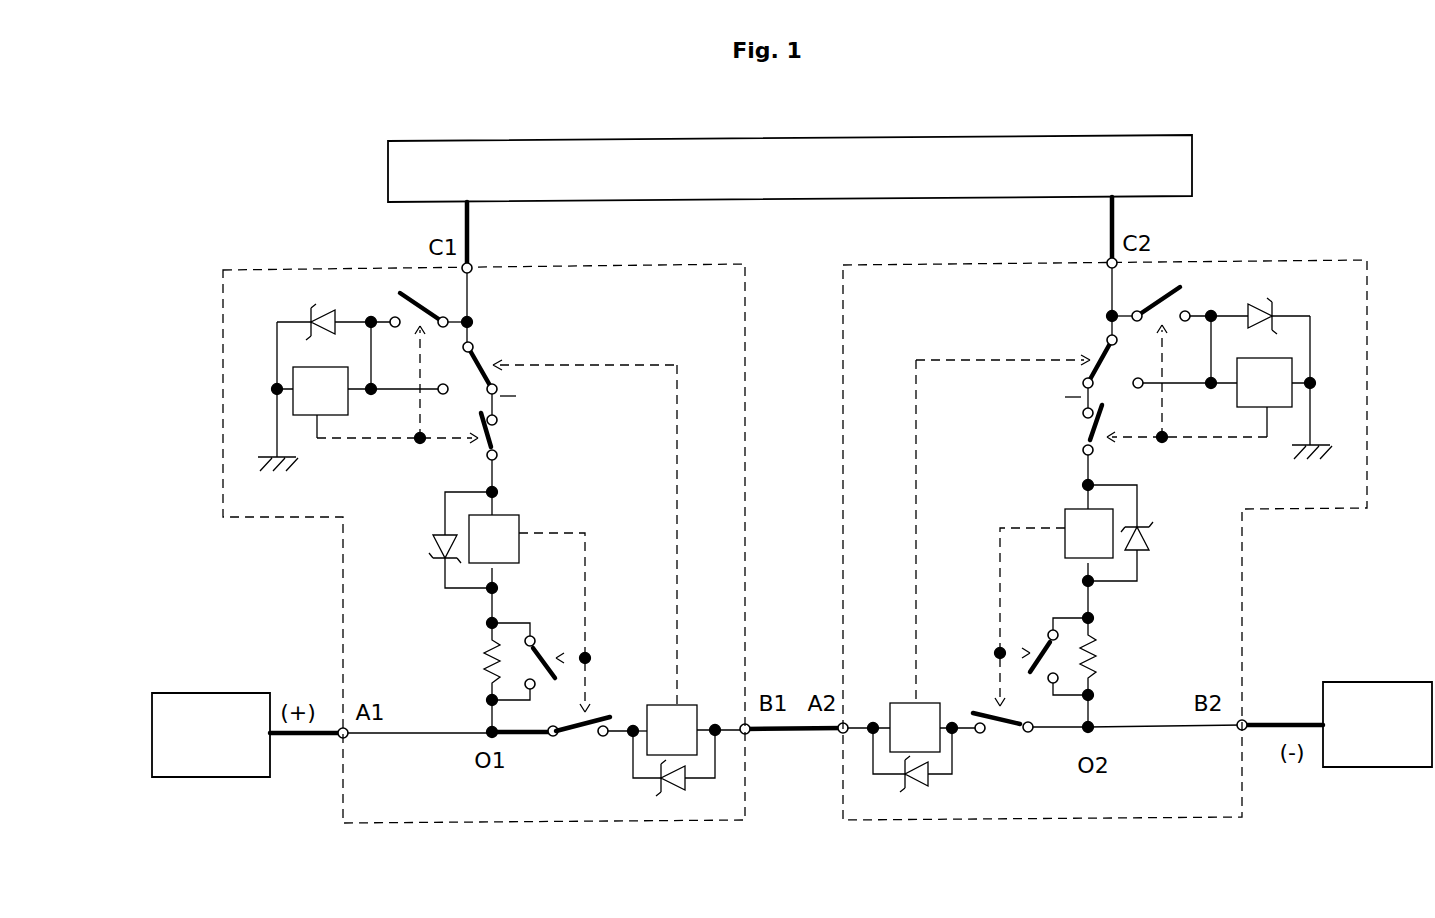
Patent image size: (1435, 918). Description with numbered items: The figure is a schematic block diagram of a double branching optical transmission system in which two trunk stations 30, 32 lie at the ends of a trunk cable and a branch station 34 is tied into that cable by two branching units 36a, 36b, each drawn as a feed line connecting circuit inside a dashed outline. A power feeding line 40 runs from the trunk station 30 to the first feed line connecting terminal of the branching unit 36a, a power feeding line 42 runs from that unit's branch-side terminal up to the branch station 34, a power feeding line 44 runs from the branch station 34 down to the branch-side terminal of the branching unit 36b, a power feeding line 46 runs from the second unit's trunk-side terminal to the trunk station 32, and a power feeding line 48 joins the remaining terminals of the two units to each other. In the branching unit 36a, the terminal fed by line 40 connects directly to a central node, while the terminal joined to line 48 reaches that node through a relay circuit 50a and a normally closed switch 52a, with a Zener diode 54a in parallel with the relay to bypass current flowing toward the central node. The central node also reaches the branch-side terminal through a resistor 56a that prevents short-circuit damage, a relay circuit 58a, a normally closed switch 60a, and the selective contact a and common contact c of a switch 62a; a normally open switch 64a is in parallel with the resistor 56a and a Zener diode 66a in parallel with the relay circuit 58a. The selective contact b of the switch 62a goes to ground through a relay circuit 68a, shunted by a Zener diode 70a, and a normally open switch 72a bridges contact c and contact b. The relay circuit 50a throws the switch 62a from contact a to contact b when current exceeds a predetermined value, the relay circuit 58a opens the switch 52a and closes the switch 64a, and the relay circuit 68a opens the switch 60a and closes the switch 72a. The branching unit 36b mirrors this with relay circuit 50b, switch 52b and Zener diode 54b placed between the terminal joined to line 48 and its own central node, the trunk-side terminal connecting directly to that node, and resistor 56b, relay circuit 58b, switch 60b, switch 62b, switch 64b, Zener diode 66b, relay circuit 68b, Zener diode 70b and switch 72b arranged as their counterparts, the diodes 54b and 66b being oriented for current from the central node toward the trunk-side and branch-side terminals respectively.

The trunk station 30 is at (213, 772).
The trunk station 32 is at (1372, 762).
The branch station 34 is at (388, 178).
The branching unit 36a is at (528, 813).
The branching unit 36b is at (1022, 803).
The power feeding line 40 is at (313, 740).
The power feeding line 42 is at (473, 238).
The power feeding line 44 is at (1101, 232).
The power feeding line 46 is at (1289, 716).
The power feeding line 48 is at (795, 735).
The relay circuit 50a is at (662, 705).
The relay circuit 50b is at (934, 707).
The normally closed switch 52a is at (577, 738).
The normally closed switch 52b is at (1000, 735).
The Zener diode 54a is at (668, 795).
The Zener diode 54b is at (915, 790).
The resistor 56a is at (483, 657).
The resistor 56b is at (1100, 652).
The relay circuit 58a is at (504, 523).
The relay circuit 58b is at (1079, 517).
The normally closed switch 60a is at (500, 437).
The normally closed switch 60b is at (1082, 431).
The switch 62a is at (480, 357).
The switch 62b is at (1107, 356).
The normally open switch 64a is at (542, 640).
The normally open switch 64b is at (1039, 634).
The Zener diode 66a is at (434, 549).
The Zener diode 66b is at (1155, 538).
The relay circuit 68a is at (304, 417).
The relay circuit 68b is at (1279, 409).
The Zener diode 70a is at (325, 303).
The Zener diode 70b is at (1260, 296).
The normally open switch 72a is at (398, 312).
The normally open switch 72b is at (1184, 302).